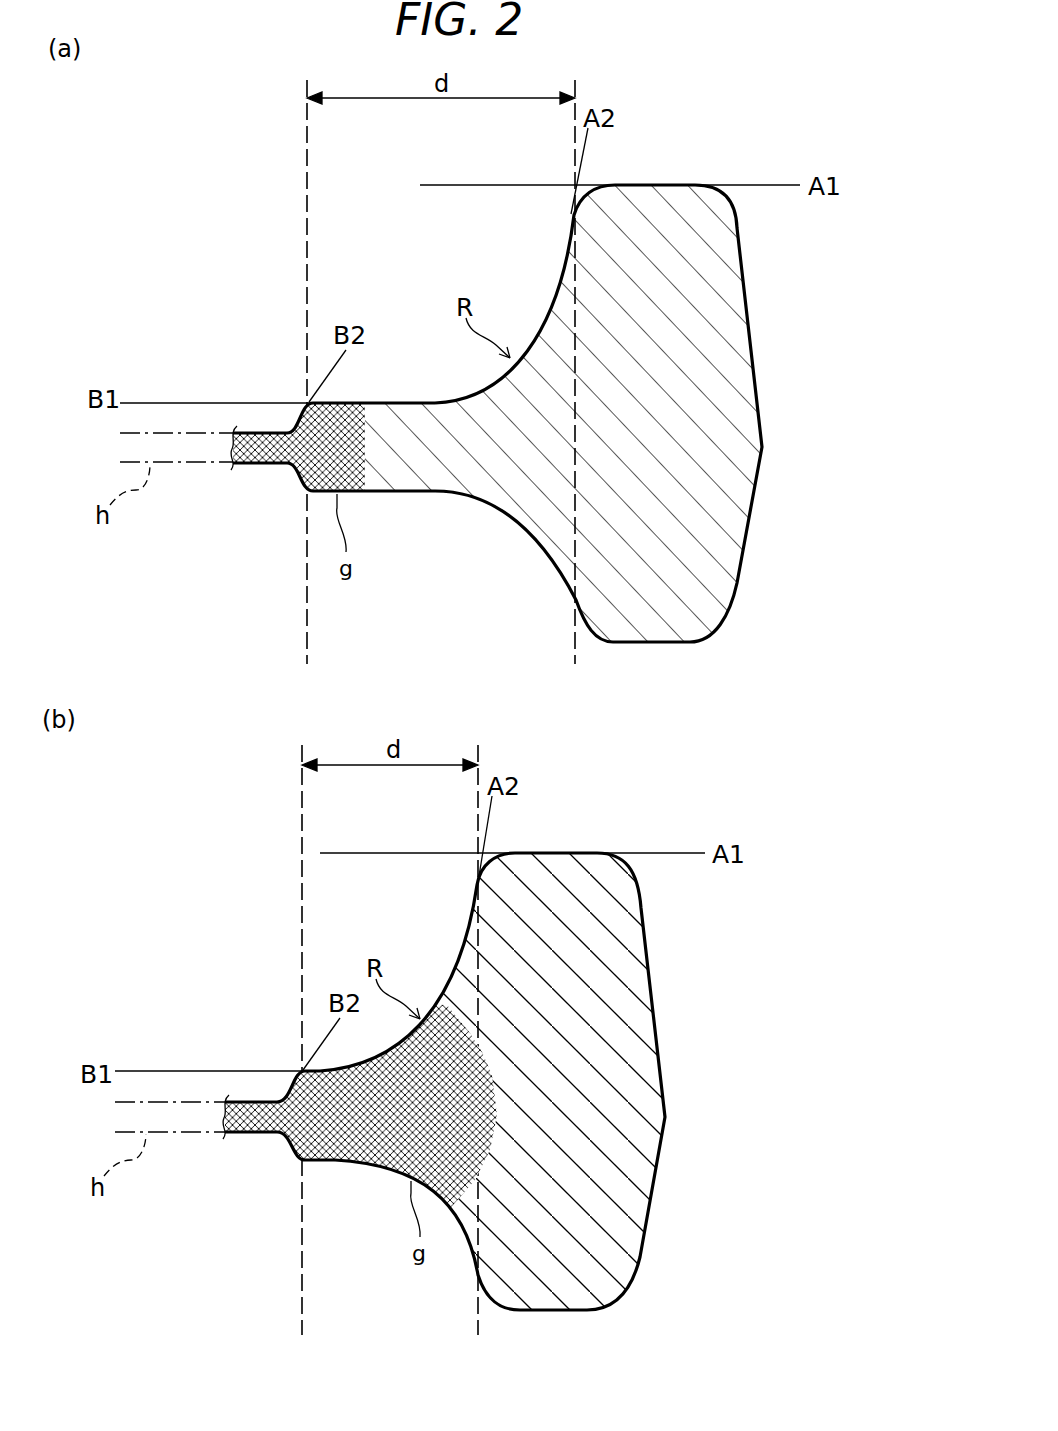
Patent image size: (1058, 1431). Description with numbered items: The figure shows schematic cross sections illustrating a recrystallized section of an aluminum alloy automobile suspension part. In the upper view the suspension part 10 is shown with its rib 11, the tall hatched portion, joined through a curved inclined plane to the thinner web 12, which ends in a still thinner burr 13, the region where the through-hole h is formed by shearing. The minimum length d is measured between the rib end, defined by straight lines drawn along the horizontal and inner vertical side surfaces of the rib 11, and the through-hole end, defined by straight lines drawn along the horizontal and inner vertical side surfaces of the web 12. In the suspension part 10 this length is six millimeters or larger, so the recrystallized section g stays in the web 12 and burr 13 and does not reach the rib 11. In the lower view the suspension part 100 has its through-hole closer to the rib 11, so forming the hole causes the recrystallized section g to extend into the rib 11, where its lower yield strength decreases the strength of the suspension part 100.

The automobile suspension part 10 is at (745, 131).
The suspension part 100 is at (643, 801).
The rib 11 is at (718, 619).
The web 12 is at (421, 467).
The burr 13 is at (254, 463).